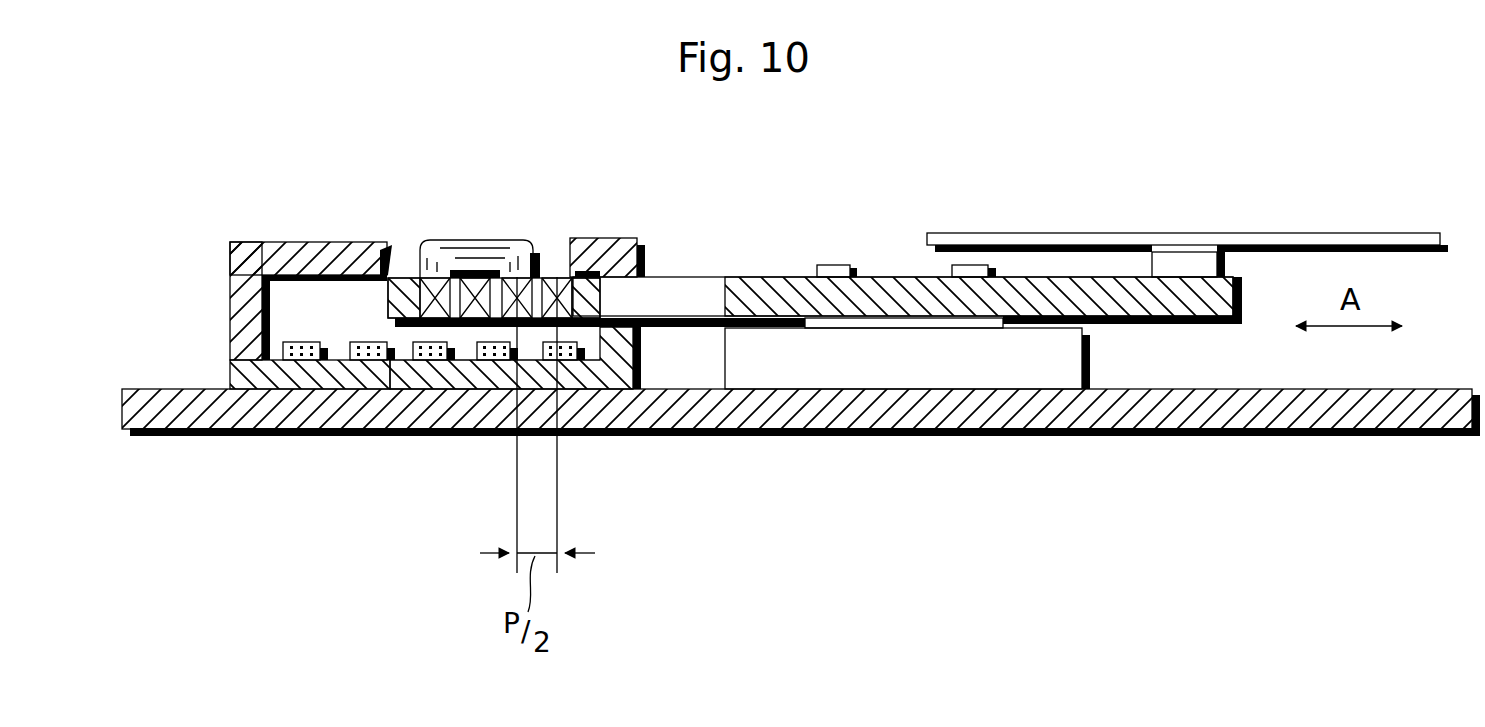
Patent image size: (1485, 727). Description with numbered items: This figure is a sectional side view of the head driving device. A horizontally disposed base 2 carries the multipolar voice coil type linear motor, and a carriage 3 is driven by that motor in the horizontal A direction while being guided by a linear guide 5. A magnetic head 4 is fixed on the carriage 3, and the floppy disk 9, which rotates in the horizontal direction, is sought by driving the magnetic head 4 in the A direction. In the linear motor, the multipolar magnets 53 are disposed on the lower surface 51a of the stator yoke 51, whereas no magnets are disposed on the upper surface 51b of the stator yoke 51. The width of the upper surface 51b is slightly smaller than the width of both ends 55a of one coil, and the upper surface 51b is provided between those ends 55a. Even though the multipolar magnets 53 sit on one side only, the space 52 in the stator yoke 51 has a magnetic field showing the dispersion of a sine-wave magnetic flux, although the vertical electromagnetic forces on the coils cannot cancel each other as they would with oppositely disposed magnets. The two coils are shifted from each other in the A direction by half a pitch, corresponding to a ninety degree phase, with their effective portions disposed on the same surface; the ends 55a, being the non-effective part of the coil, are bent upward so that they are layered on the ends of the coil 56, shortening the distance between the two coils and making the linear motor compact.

The base 2 is at (983, 410).
The carriage 3 is at (762, 277).
The magnetic head 4 is at (1178, 235).
The linear guide 5 is at (897, 362).
The floppy disk 9 is at (1025, 235).
The stator yoke 51 is at (256, 349).
The lower surface of stator yoke 51a is at (265, 378).
The upper surface of stator yoke 51b is at (308, 248).
The space in stator yoke 52 is at (255, 249).
The multipolar magnets 53 is at (490, 365).
The ends of coil 55a is at (463, 253).
The coil 56 is at (548, 280).